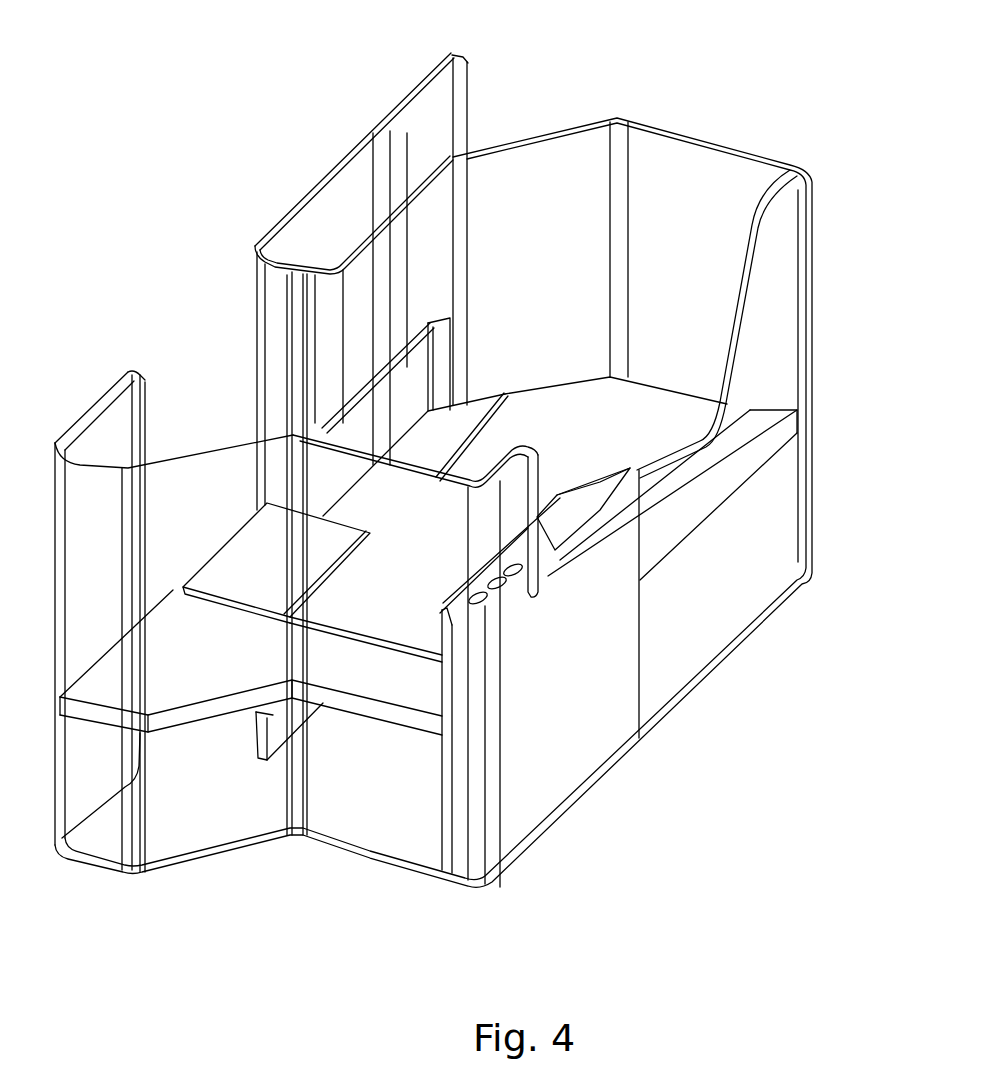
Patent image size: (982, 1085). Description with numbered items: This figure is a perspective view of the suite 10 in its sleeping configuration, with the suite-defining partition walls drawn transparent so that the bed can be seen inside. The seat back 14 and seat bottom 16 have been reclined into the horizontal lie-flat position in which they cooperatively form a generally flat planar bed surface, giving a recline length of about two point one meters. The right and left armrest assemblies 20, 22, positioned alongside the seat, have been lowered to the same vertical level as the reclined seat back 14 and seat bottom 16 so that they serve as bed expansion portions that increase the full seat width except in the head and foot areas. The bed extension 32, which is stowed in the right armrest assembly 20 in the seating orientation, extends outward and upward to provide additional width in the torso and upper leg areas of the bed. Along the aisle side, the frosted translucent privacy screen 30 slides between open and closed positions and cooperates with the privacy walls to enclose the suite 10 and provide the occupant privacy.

The suite 10 is at (207, 103).
The seat back 14 is at (657, 403).
The seat bottom 16 is at (402, 607).
The right armrest assembly 20 is at (462, 410).
The left armrest assembly 22 is at (765, 428).
The privacy screen 30 is at (350, 152).
The bed extension 32 is at (267, 557).